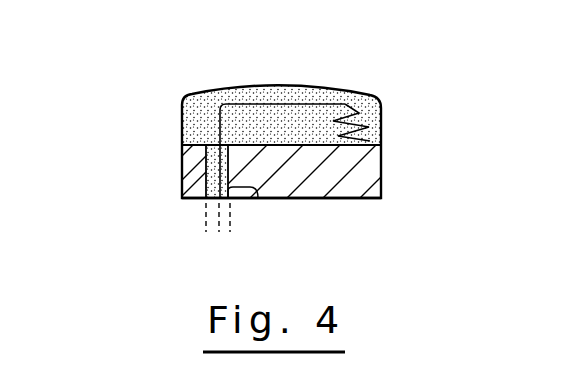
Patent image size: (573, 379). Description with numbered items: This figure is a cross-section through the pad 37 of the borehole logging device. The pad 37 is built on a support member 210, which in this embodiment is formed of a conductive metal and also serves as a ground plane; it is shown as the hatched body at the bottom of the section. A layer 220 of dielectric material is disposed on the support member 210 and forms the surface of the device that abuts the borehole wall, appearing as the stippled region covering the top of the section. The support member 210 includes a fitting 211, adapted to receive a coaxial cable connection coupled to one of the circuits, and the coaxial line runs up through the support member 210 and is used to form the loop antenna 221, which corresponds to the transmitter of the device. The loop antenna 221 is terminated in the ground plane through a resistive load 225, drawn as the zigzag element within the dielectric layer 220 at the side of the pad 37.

The pad 37 is at (167, 142).
The support member 210 is at (377, 163).
The fitting 211 is at (255, 198).
The layer of dielectric material 220 is at (332, 93).
The loop antenna 221 is at (280, 107).
The resistive load 225 is at (378, 128).